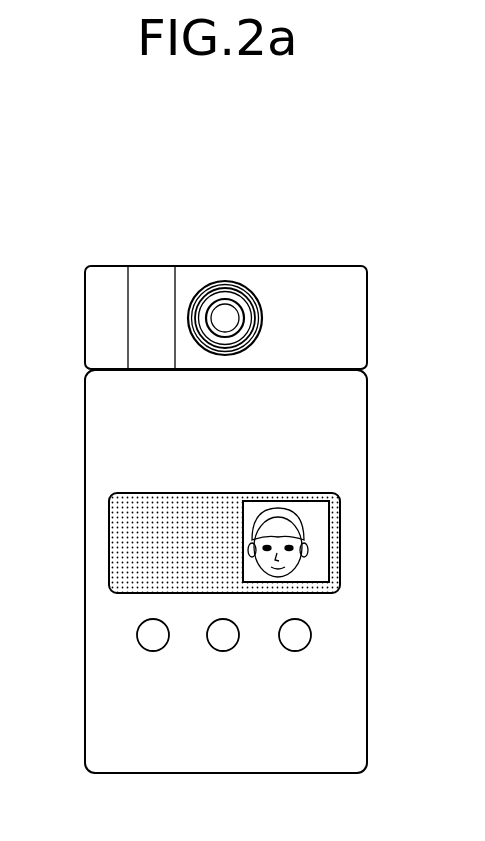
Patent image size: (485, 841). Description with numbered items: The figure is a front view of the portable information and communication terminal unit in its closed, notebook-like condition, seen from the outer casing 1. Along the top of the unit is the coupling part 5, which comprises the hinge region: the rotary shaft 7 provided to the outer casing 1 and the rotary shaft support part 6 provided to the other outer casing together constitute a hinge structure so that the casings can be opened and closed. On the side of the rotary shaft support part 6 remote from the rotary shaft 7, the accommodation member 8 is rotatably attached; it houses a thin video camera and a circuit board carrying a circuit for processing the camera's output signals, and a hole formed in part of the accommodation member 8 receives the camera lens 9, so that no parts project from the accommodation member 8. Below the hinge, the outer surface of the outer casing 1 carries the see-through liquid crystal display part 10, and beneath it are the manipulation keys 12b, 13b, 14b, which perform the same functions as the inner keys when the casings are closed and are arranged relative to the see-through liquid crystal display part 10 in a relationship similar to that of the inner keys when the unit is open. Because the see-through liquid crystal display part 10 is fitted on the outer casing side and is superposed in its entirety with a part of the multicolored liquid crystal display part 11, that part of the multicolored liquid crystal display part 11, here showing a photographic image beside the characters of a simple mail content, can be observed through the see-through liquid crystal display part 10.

The outer casing 1 is at (340, 725).
The coupling part 5 is at (320, 255).
The rotary shaft support part 6 is at (150, 283).
The rotary shaft 7 is at (100, 318).
The accommodation member 8 is at (332, 342).
The camera lens 9 is at (228, 318).
The see-through liquid crystal display part 10 is at (150, 507).
The multicolored liquid crystal display part 11 is at (340, 526).
The manipulation key 12b is at (153, 652).
The manipulation key 13b is at (223, 652).
The manipulation key 14b is at (295, 652).